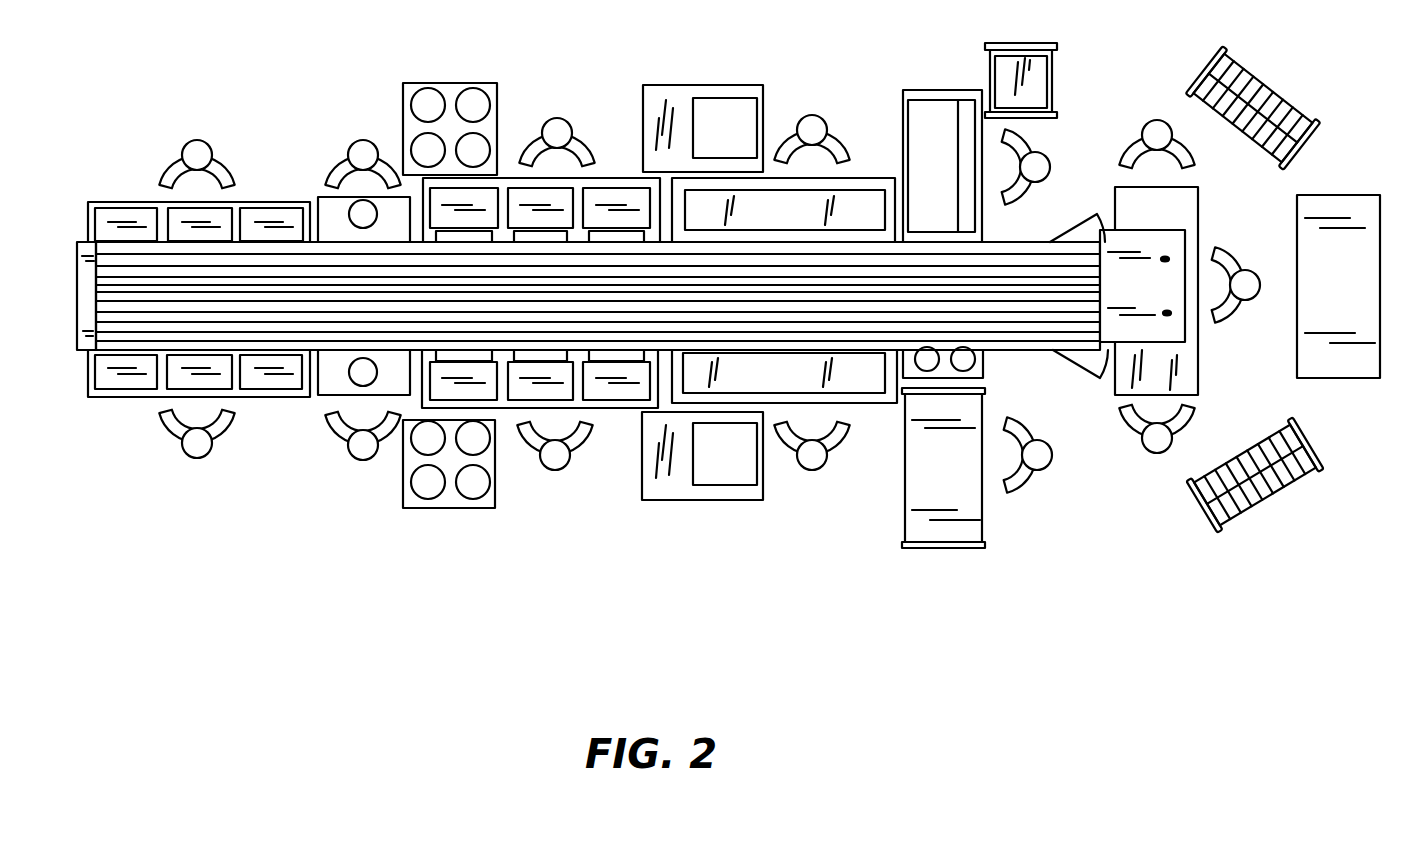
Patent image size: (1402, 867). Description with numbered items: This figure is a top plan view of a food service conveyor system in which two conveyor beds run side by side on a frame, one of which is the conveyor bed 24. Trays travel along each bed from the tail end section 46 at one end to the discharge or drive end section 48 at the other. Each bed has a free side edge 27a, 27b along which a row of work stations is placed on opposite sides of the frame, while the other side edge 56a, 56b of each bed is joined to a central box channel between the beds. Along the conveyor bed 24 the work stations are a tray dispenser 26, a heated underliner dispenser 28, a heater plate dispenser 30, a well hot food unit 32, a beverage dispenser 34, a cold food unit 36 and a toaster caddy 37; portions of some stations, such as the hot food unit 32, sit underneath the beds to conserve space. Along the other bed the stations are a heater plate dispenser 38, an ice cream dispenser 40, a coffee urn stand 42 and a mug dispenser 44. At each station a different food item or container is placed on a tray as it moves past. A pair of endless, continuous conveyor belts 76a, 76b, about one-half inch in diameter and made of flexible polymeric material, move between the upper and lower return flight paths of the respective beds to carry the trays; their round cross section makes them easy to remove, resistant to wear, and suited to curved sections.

The conveyor bed 24 is at (256, 350).
The tray dispenser 26 is at (97, 397).
The free side edge 27a is at (628, 247).
The free side edge 27b is at (890, 352).
The heated underliner dispenser 28 is at (317, 395).
The heater plate dispenser 30 is at (445, 508).
The well hot food unit 32 is at (615, 408).
The beverage dispenser 34 is at (705, 500).
The cold food unit 36 is at (873, 407).
The toaster caddy 37 is at (987, 395).
The heater plate dispenser 38 is at (452, 83).
The ice cream dispenser 40 is at (688, 70).
The coffee urn stand 42 is at (930, 90).
The mug dispenser 44 is at (1027, 43).
The tail end section 46 is at (80, 242).
The discharge or drive end section 48 is at (1185, 337).
The other side edge 56a is at (95, 277).
The other side edge 56b is at (95, 327).
The endless continuous conveyor belt 76a is at (285, 263).
The endless continuous conveyor belt 76b is at (160, 327).